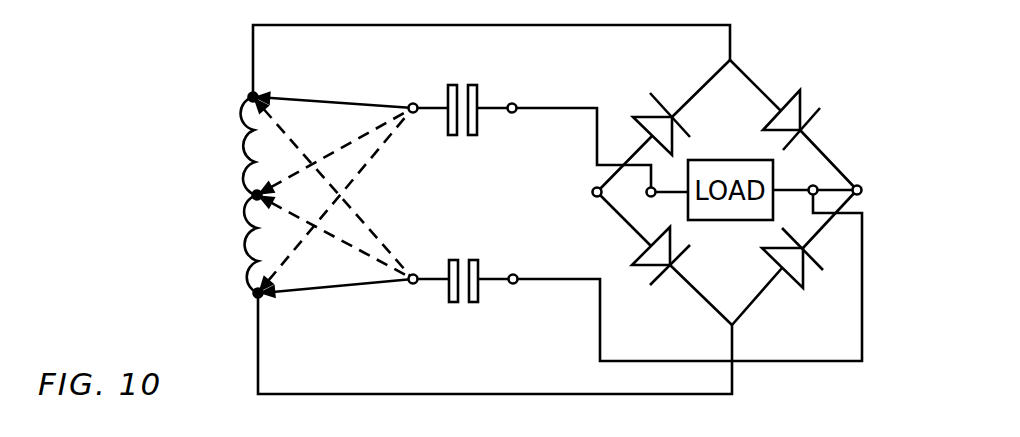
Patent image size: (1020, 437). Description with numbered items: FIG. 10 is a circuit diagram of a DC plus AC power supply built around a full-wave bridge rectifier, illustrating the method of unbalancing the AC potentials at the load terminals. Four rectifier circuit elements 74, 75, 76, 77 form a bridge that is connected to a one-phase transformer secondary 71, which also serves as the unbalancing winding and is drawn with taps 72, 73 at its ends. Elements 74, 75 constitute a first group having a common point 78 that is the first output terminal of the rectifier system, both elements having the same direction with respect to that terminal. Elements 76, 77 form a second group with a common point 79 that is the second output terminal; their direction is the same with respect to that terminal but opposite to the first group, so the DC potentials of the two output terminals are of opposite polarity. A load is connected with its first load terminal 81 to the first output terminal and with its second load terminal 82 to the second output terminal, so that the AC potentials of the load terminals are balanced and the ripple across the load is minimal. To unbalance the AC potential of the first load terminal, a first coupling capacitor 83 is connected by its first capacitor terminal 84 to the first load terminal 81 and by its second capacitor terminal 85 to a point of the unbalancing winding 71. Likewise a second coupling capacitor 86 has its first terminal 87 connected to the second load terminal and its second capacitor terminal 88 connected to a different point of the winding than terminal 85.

The one-phase transformer secondary 71 is at (255, 196).
The upper winding tap 72 is at (251, 96).
The lower winding tap 73 is at (256, 295).
The rectifier circuit element 74 is at (800, 105).
The rectifier circuit element 75 is at (792, 288).
The rectifier circuit element 76 is at (650, 267).
The rectifier circuit element 77 is at (645, 117).
The first output terminal 78 is at (861, 194).
The second output terminal 79 is at (594, 190).
The first load terminal 81 is at (813, 185).
The second load terminal 82 is at (648, 196).
The first coupling capacitor 83 is at (453, 302).
The first capacitor terminal 84 is at (515, 284).
The second capacitor terminal 85 is at (412, 284).
The second coupling capacitor 86 is at (448, 85).
The first terminal of second coupling capacitor 87 is at (513, 104).
The second capacitor terminal 88 is at (410, 105).